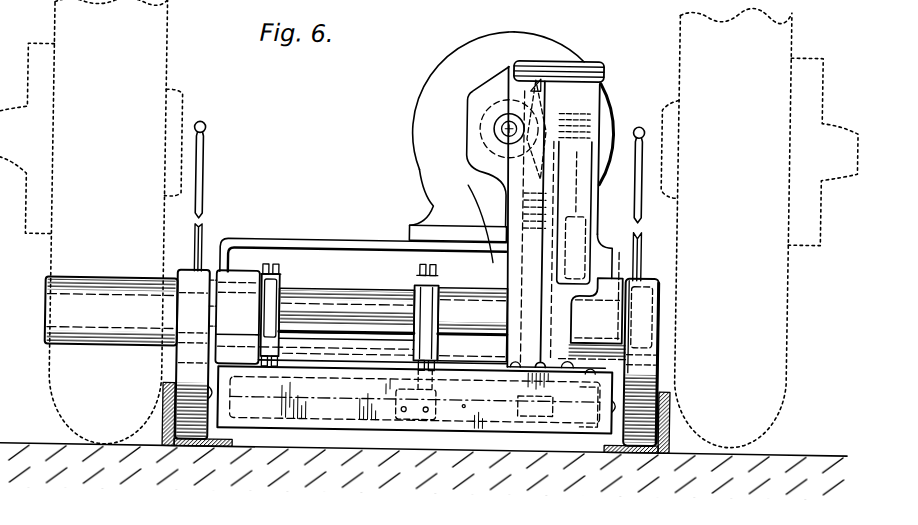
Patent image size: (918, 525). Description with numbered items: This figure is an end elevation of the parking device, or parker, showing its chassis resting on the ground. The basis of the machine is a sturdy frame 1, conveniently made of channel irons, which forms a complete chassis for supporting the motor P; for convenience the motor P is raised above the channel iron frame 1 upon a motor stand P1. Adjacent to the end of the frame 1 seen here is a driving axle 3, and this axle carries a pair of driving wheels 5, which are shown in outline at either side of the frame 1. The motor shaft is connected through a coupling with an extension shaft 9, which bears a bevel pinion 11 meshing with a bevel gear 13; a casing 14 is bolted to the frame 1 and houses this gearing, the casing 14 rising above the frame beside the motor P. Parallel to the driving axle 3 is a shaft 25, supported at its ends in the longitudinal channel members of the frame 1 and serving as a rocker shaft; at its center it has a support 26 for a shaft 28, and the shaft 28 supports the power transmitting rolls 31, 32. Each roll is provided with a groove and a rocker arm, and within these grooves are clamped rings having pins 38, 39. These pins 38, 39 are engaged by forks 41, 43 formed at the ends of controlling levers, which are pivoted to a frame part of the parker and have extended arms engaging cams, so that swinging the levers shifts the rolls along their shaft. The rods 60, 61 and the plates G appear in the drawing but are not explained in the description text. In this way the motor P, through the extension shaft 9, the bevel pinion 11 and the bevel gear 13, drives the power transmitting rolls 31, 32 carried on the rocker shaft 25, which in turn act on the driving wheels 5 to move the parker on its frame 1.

The frame 1 is at (318, 420).
The driving axle 3 is at (334, 355).
The driving wheels 5 is at (186, 272).
The extension shaft 9 is at (505, 128).
The bevel pinion 11 is at (481, 118).
The bevel gear 13 is at (534, 77).
The casing 14 is at (558, 72).
The rocker shaft 25 is at (466, 406).
The support 26 is at (411, 343).
The roll shaft 28 is at (347, 311).
The power transmitting roll 31 is at (470, 218).
The power transmitting roll 32 is at (49, 315).
The pin 38 is at (430, 369).
The pin 39 is at (273, 270).
The fork 41 is at (435, 272).
The fork 43 is at (272, 277).
The pin 60 is at (643, 157).
The pin 61 is at (203, 136).
The motor P is at (431, 77).
The motor stand P1 is at (229, 243).
The ground plate G is at (162, 413).